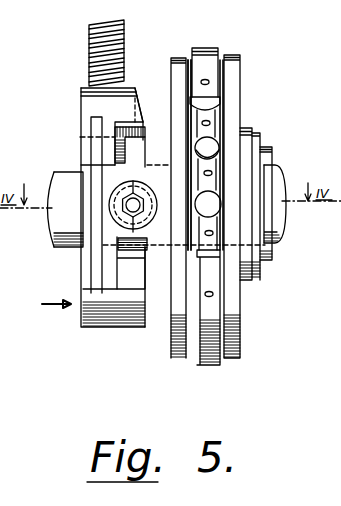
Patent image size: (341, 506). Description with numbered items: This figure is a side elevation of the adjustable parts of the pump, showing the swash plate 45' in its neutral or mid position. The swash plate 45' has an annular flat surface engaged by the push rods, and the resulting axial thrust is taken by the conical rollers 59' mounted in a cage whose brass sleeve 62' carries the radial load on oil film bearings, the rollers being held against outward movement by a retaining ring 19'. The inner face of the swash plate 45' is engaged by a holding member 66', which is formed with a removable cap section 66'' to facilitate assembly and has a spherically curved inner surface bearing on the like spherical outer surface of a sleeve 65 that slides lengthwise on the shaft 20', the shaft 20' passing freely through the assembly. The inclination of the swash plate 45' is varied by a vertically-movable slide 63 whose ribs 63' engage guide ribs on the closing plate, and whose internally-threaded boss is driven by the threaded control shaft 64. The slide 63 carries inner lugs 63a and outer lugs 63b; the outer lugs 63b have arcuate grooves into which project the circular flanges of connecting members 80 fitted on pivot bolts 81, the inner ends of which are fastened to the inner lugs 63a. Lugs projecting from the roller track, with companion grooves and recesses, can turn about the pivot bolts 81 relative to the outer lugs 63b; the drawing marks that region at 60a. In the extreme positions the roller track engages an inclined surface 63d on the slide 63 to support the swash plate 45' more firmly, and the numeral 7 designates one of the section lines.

The threaded control shaft 64 is at (88, 50).
The slide 63 is at (87, 207).
The ribs 63' is at (71, 205).
The inclined surface 63d is at (138, 90).
The outer lugs 63b is at (131, 129).
The inner lugs 63a is at (139, 188).
The connecting members 80 is at (118, 195).
The pivot bolts 81 is at (131, 206).
The step of member 60 60a is at (160, 250).
The section line 7 is at (45, 307).
The retaining ring 19' is at (223, 138).
The swash plate 45' is at (247, 205).
The conical rollers 59' is at (234, 107).
The holding member 66' is at (273, 201).
The removable cap section 66'' is at (277, 206).
The sleeve 65 is at (264, 176).
The shaft 20' is at (290, 204).
The brass sleeve 62' is at (250, 298).